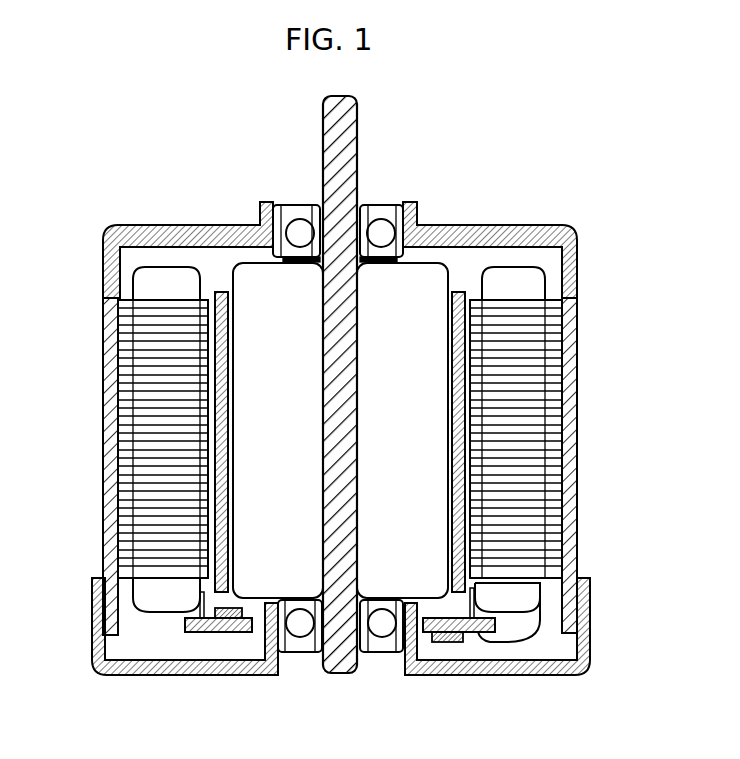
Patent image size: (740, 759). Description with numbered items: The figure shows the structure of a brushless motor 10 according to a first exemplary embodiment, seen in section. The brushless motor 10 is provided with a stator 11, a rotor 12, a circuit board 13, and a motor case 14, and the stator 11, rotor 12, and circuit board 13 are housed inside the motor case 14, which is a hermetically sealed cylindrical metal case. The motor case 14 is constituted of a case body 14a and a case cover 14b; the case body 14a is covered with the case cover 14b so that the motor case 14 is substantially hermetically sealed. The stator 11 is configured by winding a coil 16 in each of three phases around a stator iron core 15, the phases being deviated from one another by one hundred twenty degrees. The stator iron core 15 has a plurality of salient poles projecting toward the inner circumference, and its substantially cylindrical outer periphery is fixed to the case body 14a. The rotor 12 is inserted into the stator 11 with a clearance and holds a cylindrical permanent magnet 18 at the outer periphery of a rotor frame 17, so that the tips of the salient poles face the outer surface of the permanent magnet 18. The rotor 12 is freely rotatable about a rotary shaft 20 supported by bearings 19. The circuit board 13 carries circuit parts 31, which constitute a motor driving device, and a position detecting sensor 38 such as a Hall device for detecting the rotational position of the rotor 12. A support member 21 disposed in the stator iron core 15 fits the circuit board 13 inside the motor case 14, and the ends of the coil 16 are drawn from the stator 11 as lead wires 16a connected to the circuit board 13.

The brushless motor 10 is at (115, 223).
The stator 11 is at (383, 475).
The rotor 12 is at (336, 374).
The circuit board 13 is at (223, 630).
The motor case 14 is at (408, 486).
The case body 14a is at (570, 562).
The case cover 14b is at (375, 626).
The stator iron core 15 is at (552, 382).
The coil 16 is at (528, 285).
The lead wires 16a is at (537, 628).
The rotor frame 17 is at (262, 275).
The permanent magnet 18 is at (217, 290).
The bearings 19 is at (303, 215).
The rotary shaft 20 is at (350, 147).
The support member 21 is at (200, 605).
The circuit parts 31 is at (450, 642).
The position detecting sensor 38 is at (237, 620).